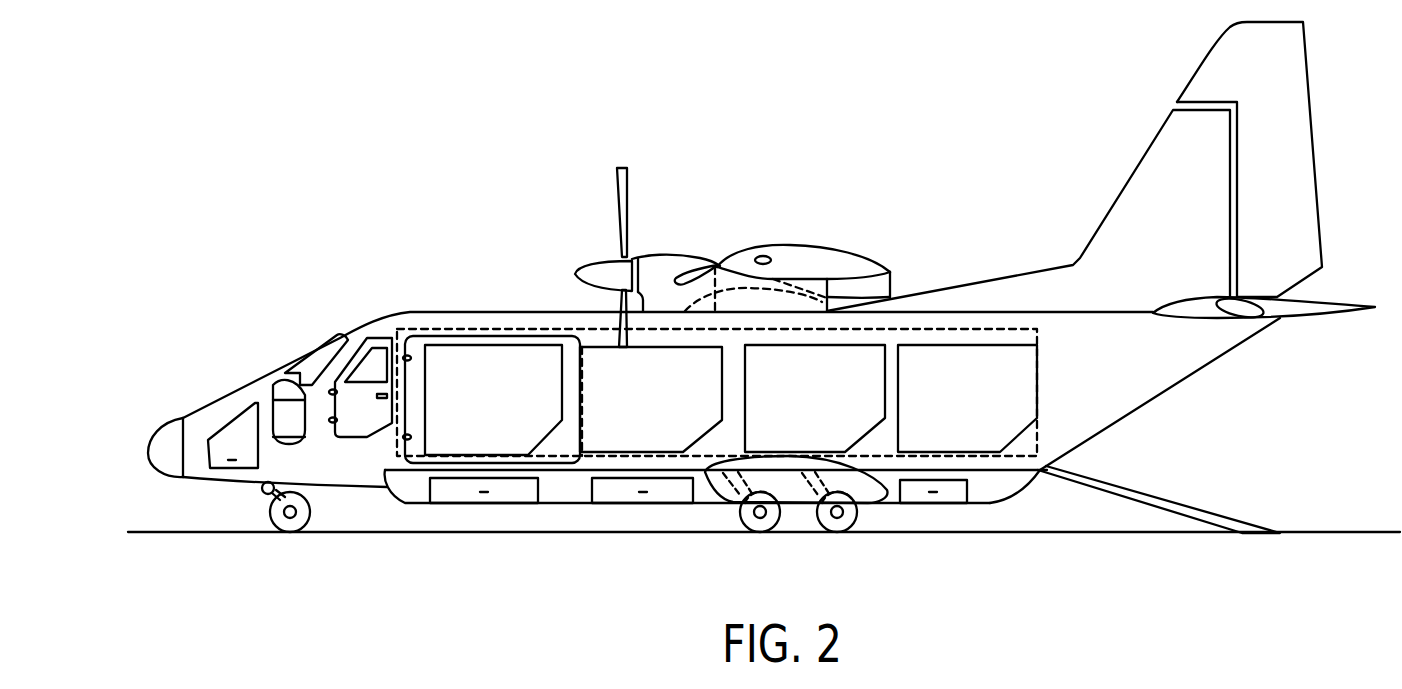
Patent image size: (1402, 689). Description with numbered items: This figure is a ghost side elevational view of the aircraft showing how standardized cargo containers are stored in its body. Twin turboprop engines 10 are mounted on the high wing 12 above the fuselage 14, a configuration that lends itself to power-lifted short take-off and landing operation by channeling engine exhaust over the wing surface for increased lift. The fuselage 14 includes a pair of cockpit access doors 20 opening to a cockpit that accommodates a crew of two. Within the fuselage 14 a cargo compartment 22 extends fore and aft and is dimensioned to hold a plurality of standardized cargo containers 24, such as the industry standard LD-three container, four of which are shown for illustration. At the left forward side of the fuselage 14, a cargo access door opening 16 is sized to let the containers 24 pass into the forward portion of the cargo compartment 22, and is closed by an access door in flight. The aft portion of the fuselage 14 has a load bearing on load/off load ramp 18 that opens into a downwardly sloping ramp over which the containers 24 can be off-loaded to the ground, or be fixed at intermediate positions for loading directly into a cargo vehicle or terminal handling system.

The turboprop engine 10 is at (673, 256).
The high wing 12 is at (805, 247).
The fuselage 14 is at (514, 311).
The cargo access door opening 16 is at (550, 457).
The load bearing on load/off load ramp 18 is at (1173, 512).
The cockpit access door 20 is at (365, 343).
The cargo compartment 22 is at (702, 447).
The standardized cargo container 24 is at (980, 443).